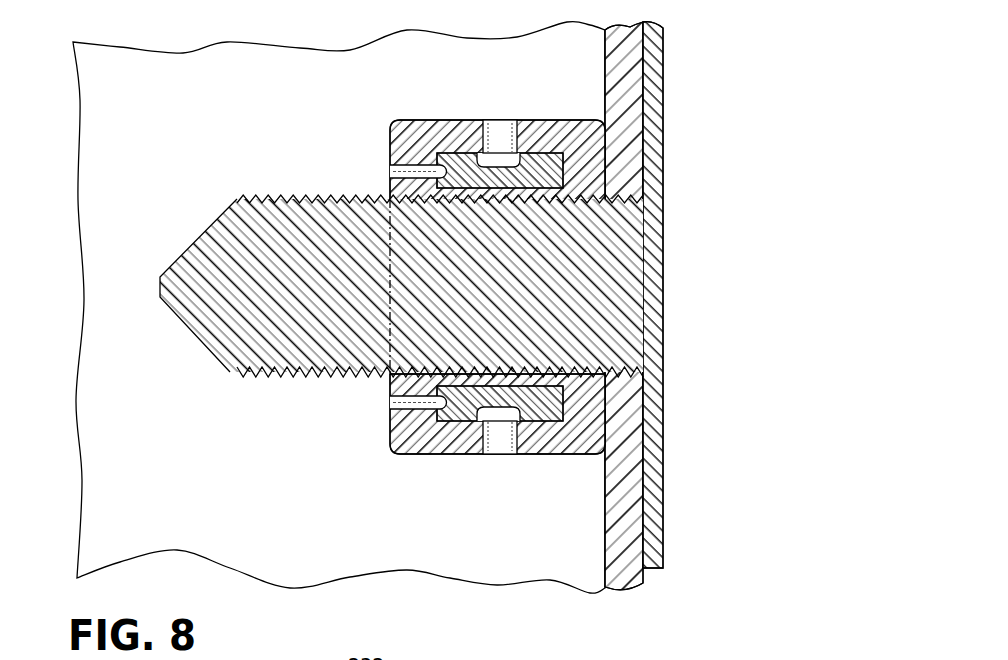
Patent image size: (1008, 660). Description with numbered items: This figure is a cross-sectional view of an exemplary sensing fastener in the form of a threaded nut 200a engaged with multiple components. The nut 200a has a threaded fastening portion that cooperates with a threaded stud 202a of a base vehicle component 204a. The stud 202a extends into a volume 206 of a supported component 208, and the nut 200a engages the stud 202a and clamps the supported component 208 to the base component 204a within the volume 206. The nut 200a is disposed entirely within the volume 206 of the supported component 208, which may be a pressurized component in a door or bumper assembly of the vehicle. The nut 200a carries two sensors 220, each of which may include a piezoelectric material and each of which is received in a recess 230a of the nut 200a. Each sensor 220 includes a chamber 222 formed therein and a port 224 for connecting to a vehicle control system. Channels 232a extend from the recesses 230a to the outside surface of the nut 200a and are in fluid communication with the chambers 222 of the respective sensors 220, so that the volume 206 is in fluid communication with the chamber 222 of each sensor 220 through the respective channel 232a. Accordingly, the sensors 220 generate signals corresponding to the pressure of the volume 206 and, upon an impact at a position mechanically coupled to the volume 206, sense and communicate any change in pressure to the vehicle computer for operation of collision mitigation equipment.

The threaded nut 200a is at (392, 120).
The threaded stud 202a is at (171, 317).
The base vehicle component 204a is at (670, 537).
The volume 206 is at (167, 524).
The supported component 208 is at (697, 338).
The sensor 220 is at (455, 170).
The chamber 222 is at (502, 289).
The port 224 is at (433, 171).
The recess 230a is at (553, 153).
The channel 232a is at (500, 132).